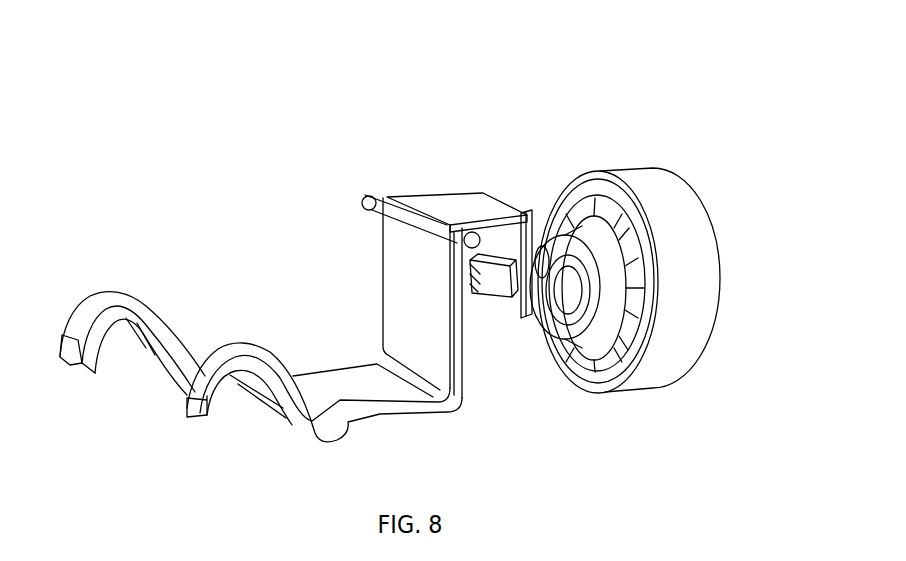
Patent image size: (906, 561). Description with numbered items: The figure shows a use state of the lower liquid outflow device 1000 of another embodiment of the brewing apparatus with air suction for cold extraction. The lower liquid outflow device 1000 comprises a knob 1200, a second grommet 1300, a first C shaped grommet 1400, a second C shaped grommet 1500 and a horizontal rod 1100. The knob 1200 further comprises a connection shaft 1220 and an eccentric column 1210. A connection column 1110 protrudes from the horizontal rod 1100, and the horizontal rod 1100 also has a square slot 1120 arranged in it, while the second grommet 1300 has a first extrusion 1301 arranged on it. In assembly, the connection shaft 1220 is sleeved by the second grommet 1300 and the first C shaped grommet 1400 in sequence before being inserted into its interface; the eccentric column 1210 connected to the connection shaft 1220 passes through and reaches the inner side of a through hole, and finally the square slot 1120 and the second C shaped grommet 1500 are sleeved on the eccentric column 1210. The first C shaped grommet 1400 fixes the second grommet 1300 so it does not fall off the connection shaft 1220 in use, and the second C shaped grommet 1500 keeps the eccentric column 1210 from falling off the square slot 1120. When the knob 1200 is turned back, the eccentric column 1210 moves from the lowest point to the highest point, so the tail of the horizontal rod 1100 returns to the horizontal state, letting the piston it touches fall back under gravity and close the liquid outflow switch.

The lower liquid outflow device 1000 is at (610, 72).
The horizontal rod 1100 is at (357, 388).
The connection column 1110 is at (373, 197).
The square slot 1120 is at (514, 315).
The knob 1200 is at (620, 177).
The eccentric column 1210 is at (503, 297).
The connection shaft 1220 is at (598, 338).
The second grommet 1300 is at (590, 233).
The first extrusion 1301 is at (630, 234).
The first C shaped grommet 1400 is at (540, 245).
The second C shaped grommet 1500 is at (474, 297).